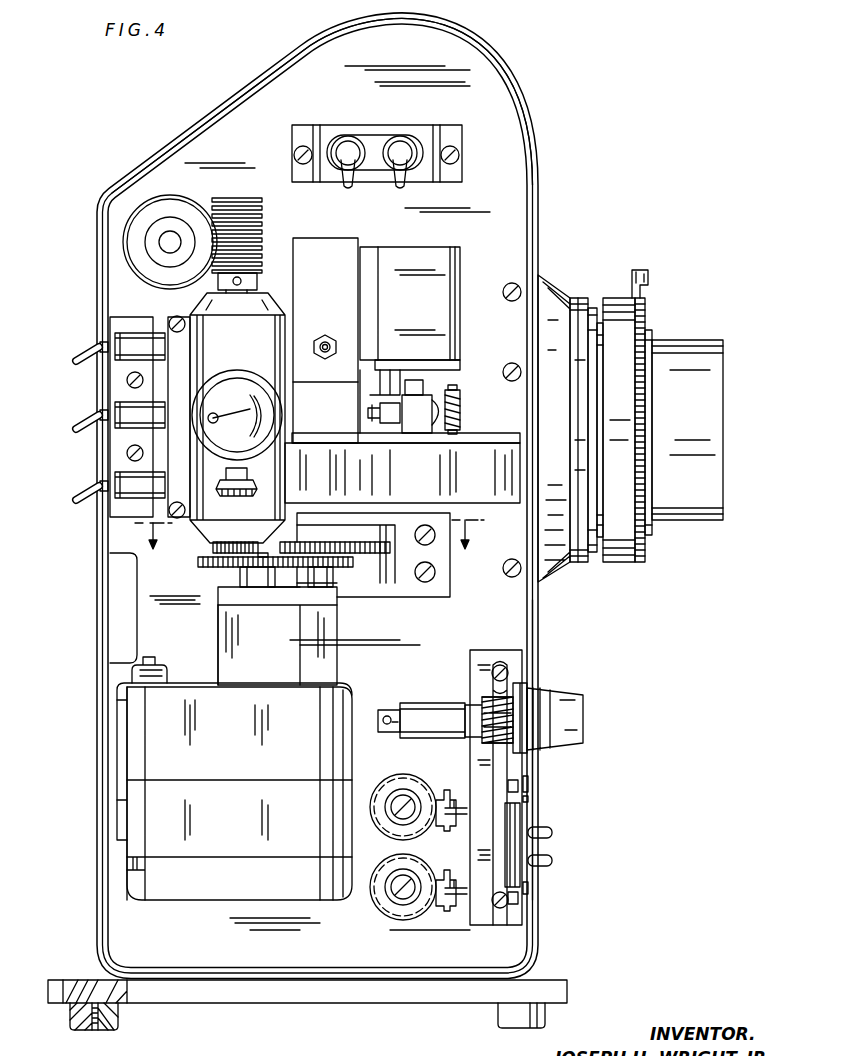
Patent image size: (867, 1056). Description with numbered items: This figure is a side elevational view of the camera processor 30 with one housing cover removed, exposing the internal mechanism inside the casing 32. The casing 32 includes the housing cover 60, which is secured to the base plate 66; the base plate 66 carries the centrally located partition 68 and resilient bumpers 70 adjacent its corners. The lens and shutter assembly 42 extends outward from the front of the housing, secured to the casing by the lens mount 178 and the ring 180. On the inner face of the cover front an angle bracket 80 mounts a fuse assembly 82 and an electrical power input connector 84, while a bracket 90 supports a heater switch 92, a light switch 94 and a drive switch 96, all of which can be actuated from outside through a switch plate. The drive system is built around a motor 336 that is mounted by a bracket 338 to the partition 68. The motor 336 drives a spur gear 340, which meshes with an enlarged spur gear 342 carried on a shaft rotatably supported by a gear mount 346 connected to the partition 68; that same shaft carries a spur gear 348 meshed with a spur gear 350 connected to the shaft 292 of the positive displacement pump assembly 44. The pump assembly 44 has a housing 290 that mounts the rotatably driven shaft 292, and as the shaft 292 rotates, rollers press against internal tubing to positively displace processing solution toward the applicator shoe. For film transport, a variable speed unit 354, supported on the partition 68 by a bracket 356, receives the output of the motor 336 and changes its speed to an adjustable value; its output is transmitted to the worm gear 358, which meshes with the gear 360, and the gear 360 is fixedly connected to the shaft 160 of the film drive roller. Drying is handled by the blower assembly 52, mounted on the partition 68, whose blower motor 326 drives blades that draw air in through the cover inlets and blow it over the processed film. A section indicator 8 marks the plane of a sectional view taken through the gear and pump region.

The camera processor 30 is at (541, 74).
The casing 32 is at (497, 35).
The housing cover 60 is at (180, 140).
The partition 68 is at (514, 631).
The base plate 66 is at (329, 1004).
The resilient bumpers 70 is at (72, 1030).
The gear 360 is at (140, 229).
The shaft 160 is at (160, 245).
The worm gear 358 is at (230, 204).
The variable speed unit 354 is at (284, 337).
The bracket 356 is at (174, 316).
The bracket 90 is at (122, 316).
The heater switch 92 is at (78, 357).
The light switch 94 is at (78, 426).
The drive switch 96 is at (78, 498).
The blower motor 326 is at (452, 411).
The blower assembly 52 is at (497, 510).
The section line 8- 8 is at (309, 537).
The spur gear 340 is at (213, 548).
The spur gear 348 is at (352, 563).
The enlarged spur gear 342 is at (395, 547).
The spur gear 350 is at (325, 572).
The gear mount 346 is at (440, 597).
The housing 290 is at (337, 627).
The shaft 292 is at (279, 591).
The positive displacement pump assembly 44 is at (204, 631).
The bracket 338 is at (118, 698).
The motor 336 is at (236, 899).
The angle bracket 80 is at (474, 762).
The fuse assembly 82 is at (583, 728).
The electrical power input connector 84 is at (548, 836).
The lens mount 178 is at (548, 290).
The ring 180 is at (578, 563).
The lens and shutter assembly 42 is at (672, 576).